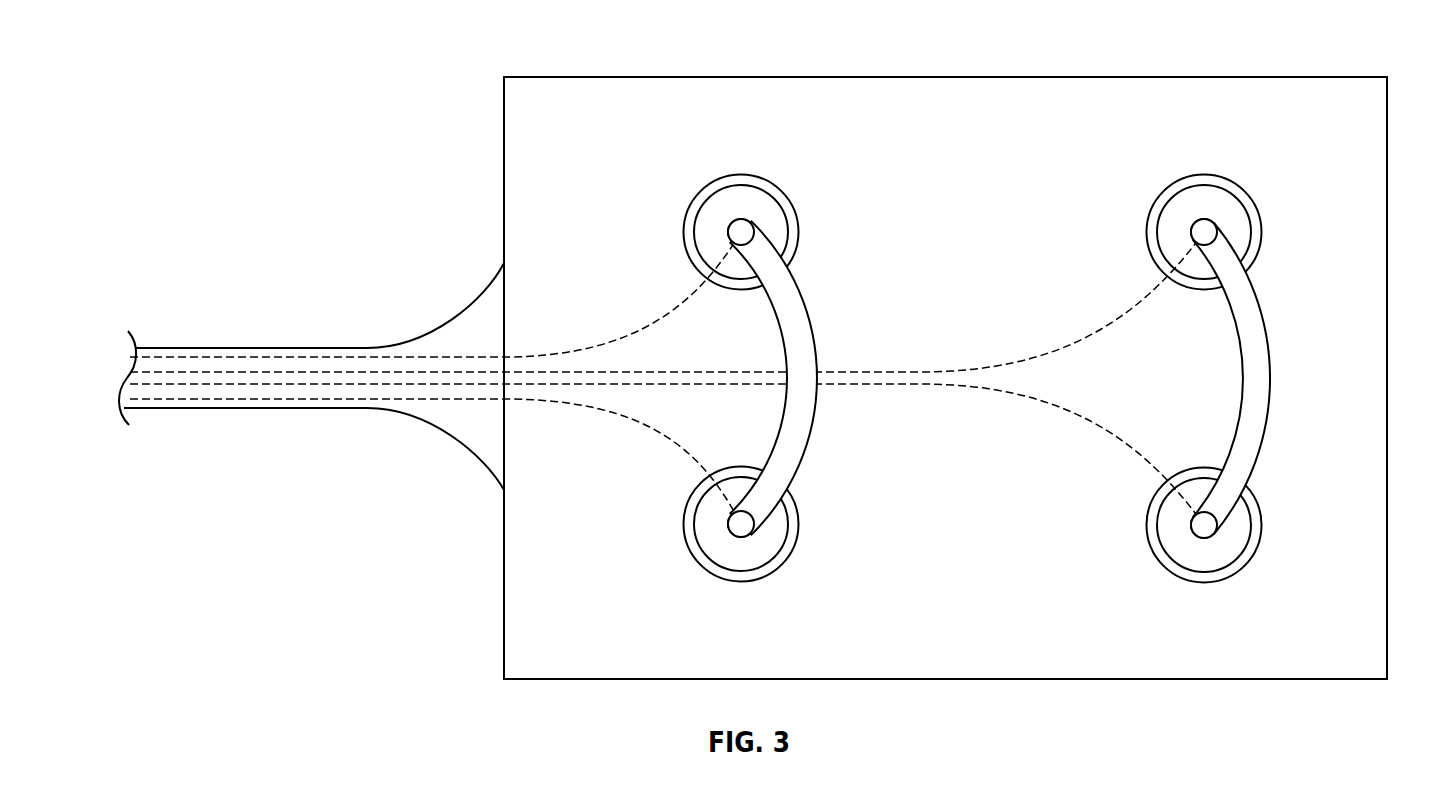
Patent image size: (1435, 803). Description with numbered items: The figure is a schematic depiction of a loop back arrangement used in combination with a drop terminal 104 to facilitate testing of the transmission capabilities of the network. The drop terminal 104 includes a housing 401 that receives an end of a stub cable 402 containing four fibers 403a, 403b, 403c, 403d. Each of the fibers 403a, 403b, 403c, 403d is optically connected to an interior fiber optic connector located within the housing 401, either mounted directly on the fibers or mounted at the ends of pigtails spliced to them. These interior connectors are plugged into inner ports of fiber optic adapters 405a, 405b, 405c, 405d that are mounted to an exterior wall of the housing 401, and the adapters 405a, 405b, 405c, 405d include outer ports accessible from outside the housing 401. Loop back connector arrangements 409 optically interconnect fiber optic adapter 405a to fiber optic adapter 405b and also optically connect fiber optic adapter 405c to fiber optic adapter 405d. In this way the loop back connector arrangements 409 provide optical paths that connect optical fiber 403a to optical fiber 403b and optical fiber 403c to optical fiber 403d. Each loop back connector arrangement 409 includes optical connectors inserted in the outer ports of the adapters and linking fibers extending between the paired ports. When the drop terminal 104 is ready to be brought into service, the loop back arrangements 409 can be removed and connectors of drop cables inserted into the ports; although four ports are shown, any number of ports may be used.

The drop terminal 104 is at (753, 360).
The housing 401 is at (945, 77).
The stub cable 402 is at (282, 348).
The optical fiber 403a is at (205, 358).
The optical fiber 403b is at (348, 402).
The optical fiber 403c is at (347, 373).
The optical fiber 403d is at (222, 385).
The fiber optic adapter 405a is at (740, 176).
The fiber optic adapter 405b is at (742, 582).
The fiber optic adapter 405c is at (1205, 176).
The fiber optic adapter 405d is at (1208, 582).
The loop back connector arrangement 409 is at (813, 316).